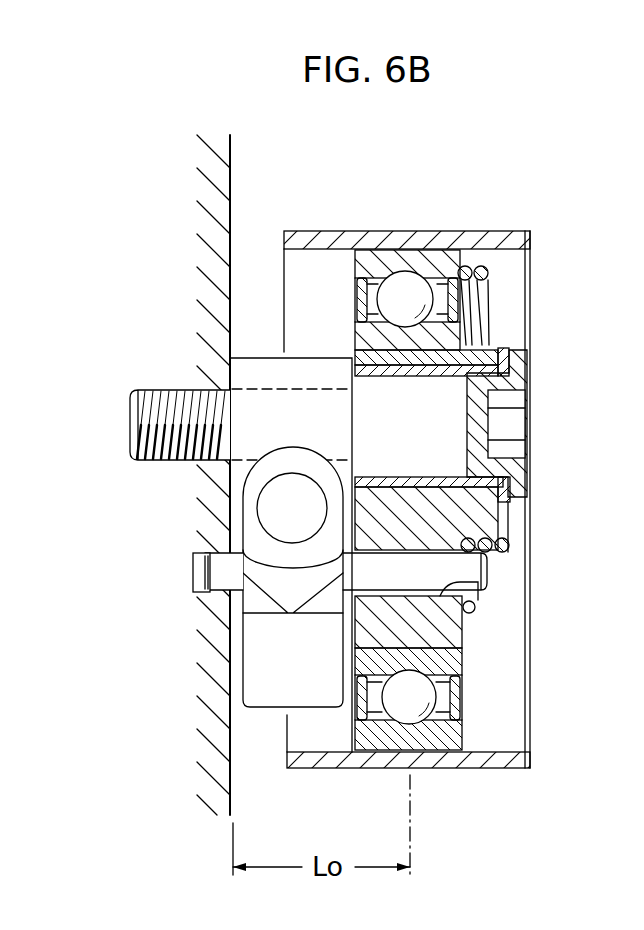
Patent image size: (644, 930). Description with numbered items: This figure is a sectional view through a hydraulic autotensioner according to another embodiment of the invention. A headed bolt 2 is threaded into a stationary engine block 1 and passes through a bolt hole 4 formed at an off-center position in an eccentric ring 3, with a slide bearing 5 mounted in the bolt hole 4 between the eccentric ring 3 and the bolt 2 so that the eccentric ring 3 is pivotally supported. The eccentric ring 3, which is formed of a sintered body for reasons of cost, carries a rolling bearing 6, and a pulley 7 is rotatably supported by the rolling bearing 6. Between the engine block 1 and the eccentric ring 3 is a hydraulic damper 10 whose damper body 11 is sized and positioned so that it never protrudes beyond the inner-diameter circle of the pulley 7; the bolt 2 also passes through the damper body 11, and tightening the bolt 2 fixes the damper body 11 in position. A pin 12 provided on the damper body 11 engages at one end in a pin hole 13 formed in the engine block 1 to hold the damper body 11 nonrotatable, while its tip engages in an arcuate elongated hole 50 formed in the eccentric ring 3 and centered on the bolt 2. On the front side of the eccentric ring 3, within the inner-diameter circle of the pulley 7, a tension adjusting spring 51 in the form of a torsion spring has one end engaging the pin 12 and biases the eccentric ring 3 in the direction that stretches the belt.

The engine block 1 is at (217, 180).
The headed bolt 2 is at (455, 422).
The eccentric ring 3 is at (455, 626).
The bolt hole 4 is at (480, 336).
The slide bearing 5 is at (496, 368).
The rolling bearing 6 is at (382, 260).
The pulley 7 is at (428, 240).
The hydraulic damper 10 is at (256, 354).
The damper body 11 is at (263, 655).
The pin 12 is at (473, 568).
The pin hole 13 is at (207, 571).
The arcuate elongated hole 50 is at (483, 582).
The tension adjusting spring 51 is at (488, 275).